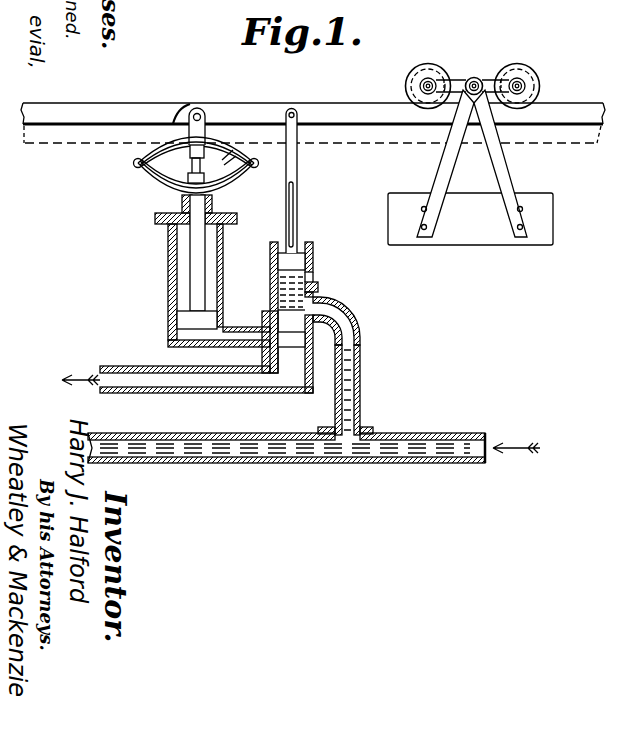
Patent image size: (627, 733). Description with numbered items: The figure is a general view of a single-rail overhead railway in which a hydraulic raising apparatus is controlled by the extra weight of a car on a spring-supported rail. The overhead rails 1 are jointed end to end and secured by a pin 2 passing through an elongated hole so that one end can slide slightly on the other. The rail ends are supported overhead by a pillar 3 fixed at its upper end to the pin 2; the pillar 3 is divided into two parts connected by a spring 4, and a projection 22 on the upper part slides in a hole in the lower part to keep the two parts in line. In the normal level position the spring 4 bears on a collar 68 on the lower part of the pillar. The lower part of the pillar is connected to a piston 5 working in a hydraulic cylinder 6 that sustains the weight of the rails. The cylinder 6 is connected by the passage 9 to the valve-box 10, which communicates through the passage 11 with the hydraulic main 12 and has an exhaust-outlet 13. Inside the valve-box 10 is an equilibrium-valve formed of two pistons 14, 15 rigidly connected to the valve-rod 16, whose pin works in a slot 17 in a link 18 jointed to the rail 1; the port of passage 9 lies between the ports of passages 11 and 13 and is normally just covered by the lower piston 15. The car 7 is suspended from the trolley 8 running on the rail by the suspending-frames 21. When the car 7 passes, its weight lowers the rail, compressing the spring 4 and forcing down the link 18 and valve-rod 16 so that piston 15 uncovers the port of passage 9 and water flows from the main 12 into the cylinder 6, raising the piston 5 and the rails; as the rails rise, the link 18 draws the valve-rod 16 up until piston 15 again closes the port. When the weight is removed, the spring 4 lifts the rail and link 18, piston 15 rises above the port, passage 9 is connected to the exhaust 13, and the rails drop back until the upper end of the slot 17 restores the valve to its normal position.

The overhead rail 1 is at (313, 122).
The pin 2 is at (205, 114).
The pillar 3 is at (193, 253).
The spring 4 is at (224, 164).
The piston 5 is at (195, 318).
The hydraulic cylinder 6 is at (182, 277).
The car 7 is at (470, 219).
The trolley 8 is at (487, 90).
The passage 9 is at (232, 337).
The valve-box 10 is at (318, 286).
The passage 11 is at (362, 386).
The hydraulic main 12 is at (381, 444).
The exhaust-outlet 13 is at (217, 381).
The piston 14 is at (298, 264).
The piston 15 is at (300, 336).
The valve-rod 16 is at (293, 251).
The slot 17 is at (293, 210).
The link 18 is at (294, 169).
The suspending-frame 21 is at (512, 163).
The projection 22 is at (192, 162).
The collar 68 is at (181, 193).